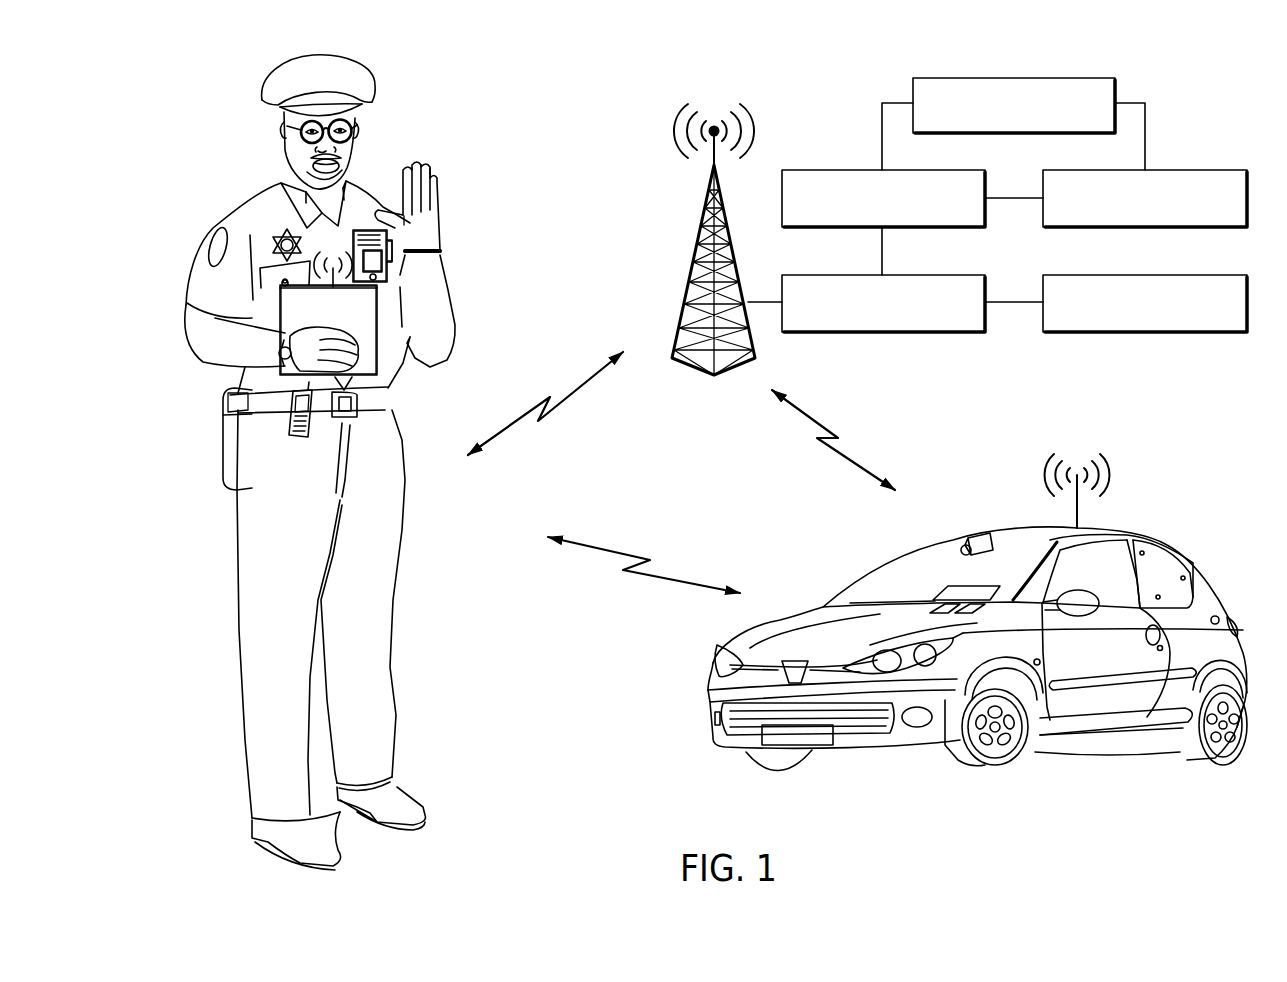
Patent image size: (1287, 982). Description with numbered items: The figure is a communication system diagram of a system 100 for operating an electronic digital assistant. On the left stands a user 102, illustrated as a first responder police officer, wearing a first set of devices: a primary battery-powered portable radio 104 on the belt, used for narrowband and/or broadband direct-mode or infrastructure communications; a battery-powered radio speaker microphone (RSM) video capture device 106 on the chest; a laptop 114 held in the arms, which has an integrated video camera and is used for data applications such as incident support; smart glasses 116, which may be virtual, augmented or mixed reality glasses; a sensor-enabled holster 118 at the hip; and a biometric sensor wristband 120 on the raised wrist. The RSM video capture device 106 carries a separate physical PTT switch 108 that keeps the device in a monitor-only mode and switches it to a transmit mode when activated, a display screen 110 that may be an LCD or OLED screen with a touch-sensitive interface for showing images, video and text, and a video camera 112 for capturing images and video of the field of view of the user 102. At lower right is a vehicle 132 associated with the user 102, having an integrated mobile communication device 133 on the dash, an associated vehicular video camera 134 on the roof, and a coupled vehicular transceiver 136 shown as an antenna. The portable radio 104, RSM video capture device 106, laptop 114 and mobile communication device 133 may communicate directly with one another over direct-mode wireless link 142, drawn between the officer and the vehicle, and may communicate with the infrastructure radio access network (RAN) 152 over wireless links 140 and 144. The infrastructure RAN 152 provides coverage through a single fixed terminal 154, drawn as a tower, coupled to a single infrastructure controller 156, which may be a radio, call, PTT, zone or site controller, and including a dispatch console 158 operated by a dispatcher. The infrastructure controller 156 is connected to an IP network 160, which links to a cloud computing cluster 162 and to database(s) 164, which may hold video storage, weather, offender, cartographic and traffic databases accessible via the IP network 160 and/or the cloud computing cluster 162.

The system 100 is at (156, 92).
The user 102 is at (390, 158).
The portable radio 104 is at (292, 438).
The RSM video capture device 106 is at (392, 233).
The PTT switch 108 is at (410, 222).
The display screen 110 is at (390, 251).
The video camera 112 is at (388, 270).
The laptop 114 is at (365, 362).
The smart glasses 116 is at (288, 126).
The sensor-enabled holster 118 is at (222, 455).
The biometric sensor wristband 120 is at (439, 252).
The vehicle 132 is at (1220, 552).
The mobile communication device 133 is at (932, 590).
The vehicular video camera 134 is at (967, 533).
The vehicular transceiver 136 is at (1079, 504).
The wireless link 140 is at (583, 389).
The direct-mode wireless link 142 is at (603, 549).
The wireless link 144 is at (807, 412).
The infrastructure radio access network (RAN) 152 is at (656, 131).
The fixed terminal 154 is at (692, 272).
The infrastructure controller 156 is at (886, 333).
The dispatch console 158 is at (1148, 333).
The IP network 160 is at (818, 228).
The cloud computing cluster 162 is at (1148, 228).
The database(s) 164 is at (913, 89).